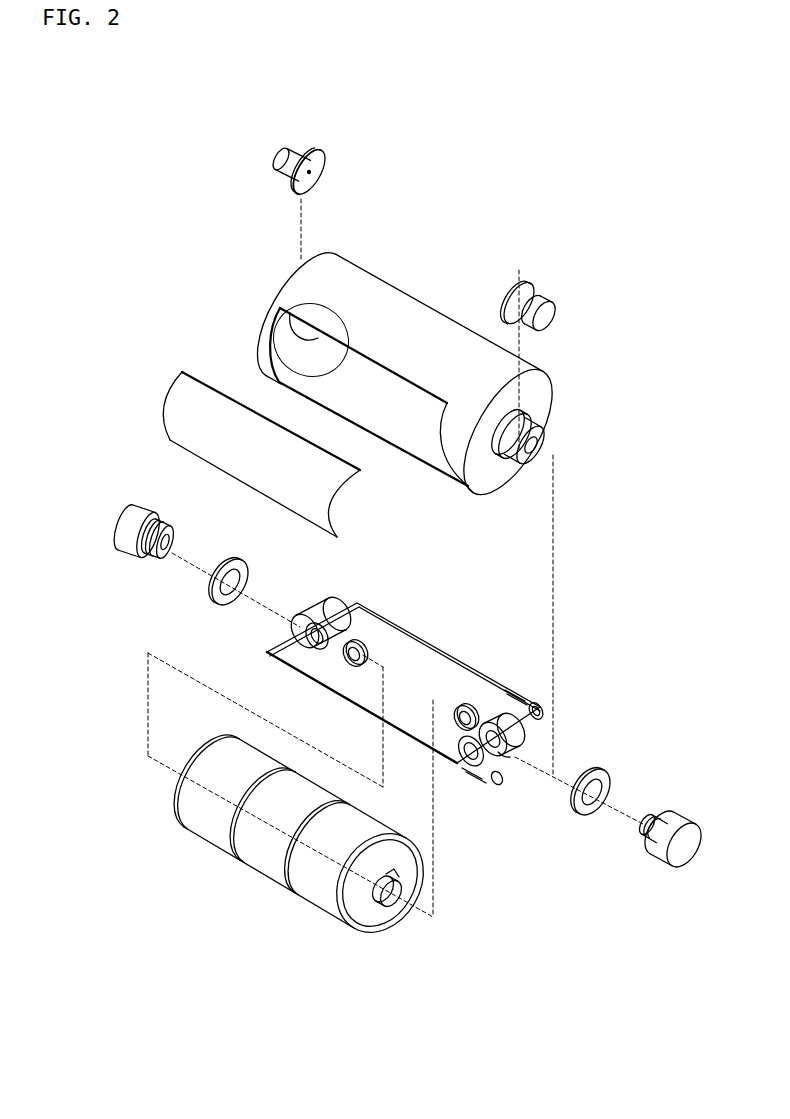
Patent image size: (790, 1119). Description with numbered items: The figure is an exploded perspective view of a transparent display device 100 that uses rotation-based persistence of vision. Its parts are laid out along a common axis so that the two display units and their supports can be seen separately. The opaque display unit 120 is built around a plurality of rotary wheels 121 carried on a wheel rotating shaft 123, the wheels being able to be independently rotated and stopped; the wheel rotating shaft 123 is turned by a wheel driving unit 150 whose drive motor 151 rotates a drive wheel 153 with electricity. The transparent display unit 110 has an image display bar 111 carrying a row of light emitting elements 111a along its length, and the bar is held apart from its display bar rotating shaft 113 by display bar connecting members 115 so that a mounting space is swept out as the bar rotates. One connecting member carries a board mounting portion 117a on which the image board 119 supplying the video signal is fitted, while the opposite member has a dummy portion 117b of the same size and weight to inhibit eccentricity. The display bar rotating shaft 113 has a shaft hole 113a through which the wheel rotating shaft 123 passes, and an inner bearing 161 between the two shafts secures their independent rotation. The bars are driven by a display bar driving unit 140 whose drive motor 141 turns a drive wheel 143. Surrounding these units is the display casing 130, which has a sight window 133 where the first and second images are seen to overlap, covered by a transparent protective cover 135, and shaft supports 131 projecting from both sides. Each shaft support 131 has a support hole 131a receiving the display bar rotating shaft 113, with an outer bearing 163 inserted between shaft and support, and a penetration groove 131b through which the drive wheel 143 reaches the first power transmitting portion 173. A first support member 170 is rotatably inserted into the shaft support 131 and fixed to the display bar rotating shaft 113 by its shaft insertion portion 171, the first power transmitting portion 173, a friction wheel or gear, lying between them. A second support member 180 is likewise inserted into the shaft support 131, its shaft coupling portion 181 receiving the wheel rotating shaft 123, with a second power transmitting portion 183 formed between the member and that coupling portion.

The transparent display device 100 is at (150, 200).
The transparent display unit 110 is at (532, 691).
The image display bar 111 is at (453, 664).
The light emitting elements 111a is at (290, 785).
The display bar rotating shaft 113 is at (522, 745).
The shaft hole 113a is at (511, 758).
The display bar connecting member 115 is at (541, 713).
The board mounting portion 117a is at (481, 778).
The dummy portion 117b is at (515, 686).
The image board 119 is at (500, 790).
The opaque display unit 120 is at (447, 885).
The rotary wheel 121 is at (266, 872).
The wheel rotating shaft 123 is at (386, 910).
The display casing 130 is at (552, 376).
The shaft support 131 is at (548, 441).
The support hole 131a is at (540, 453).
The penetration groove 131b is at (530, 410).
The sight window 133 is at (268, 302).
The protective cover 135 is at (173, 398).
The display bar driving unit 140 is at (298, 157).
The drive motor 141 is at (281, 151).
The drive wheel 143 is at (310, 150).
The wheel driving unit 150 is at (534, 479).
The drive motor 151 is at (546, 294).
The drive wheel 153 is at (517, 281).
The inner bearing 161 is at (366, 652).
The outer bearing 163 is at (250, 574).
The first support member 170 is at (113, 551).
The shaft insertion portion 171 is at (174, 538).
The first power transmitting portion 173 is at (152, 561).
The second support member 180 is at (668, 868).
The shaft coupling portion 181 is at (641, 845).
The second power transmitting portion 183 is at (663, 808).